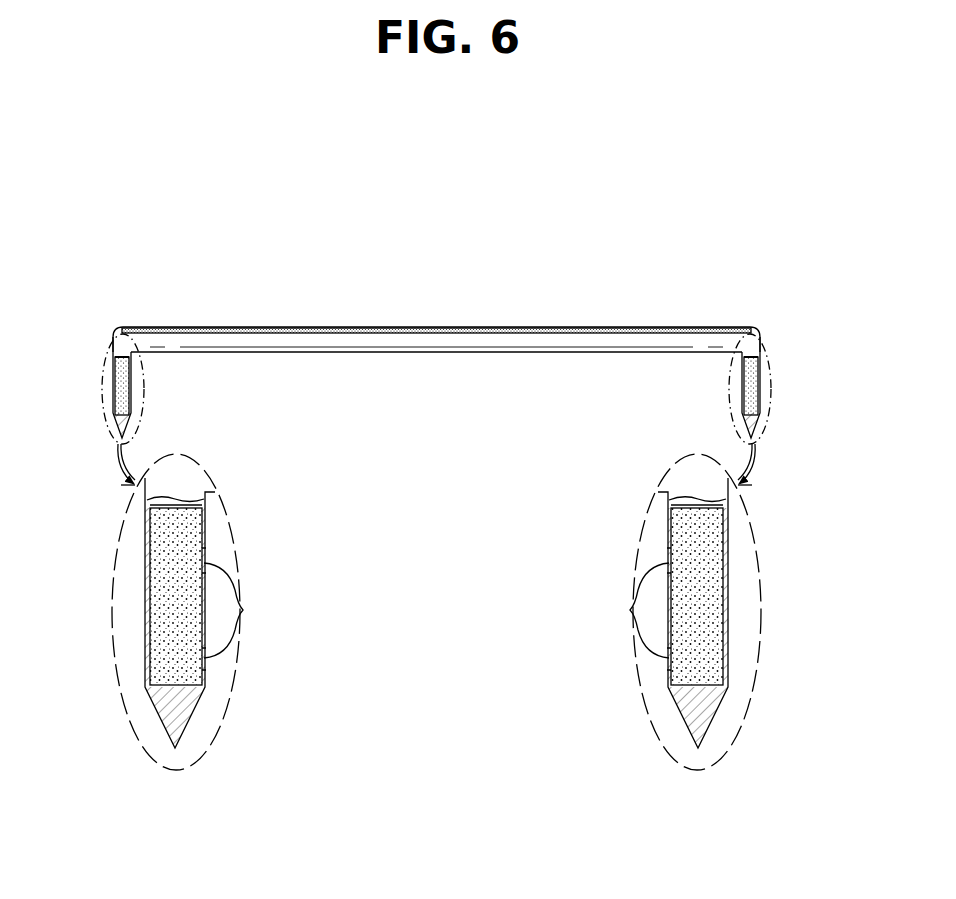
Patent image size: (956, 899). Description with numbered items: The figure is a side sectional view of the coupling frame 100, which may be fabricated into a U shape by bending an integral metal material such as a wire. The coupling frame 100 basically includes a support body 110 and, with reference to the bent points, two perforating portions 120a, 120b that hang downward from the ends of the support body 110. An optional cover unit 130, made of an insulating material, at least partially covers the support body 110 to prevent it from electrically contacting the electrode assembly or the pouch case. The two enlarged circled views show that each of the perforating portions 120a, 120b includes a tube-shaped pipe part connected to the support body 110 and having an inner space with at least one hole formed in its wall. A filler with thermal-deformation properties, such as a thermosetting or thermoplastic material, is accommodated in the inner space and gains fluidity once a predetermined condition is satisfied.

The coupling frame 100 is at (450, 287).
The support body 110 is at (549, 353).
The first perforating portion 120a is at (113, 345).
The second perforating portion 120b is at (760, 345).
The cover unit 130 is at (549, 327).